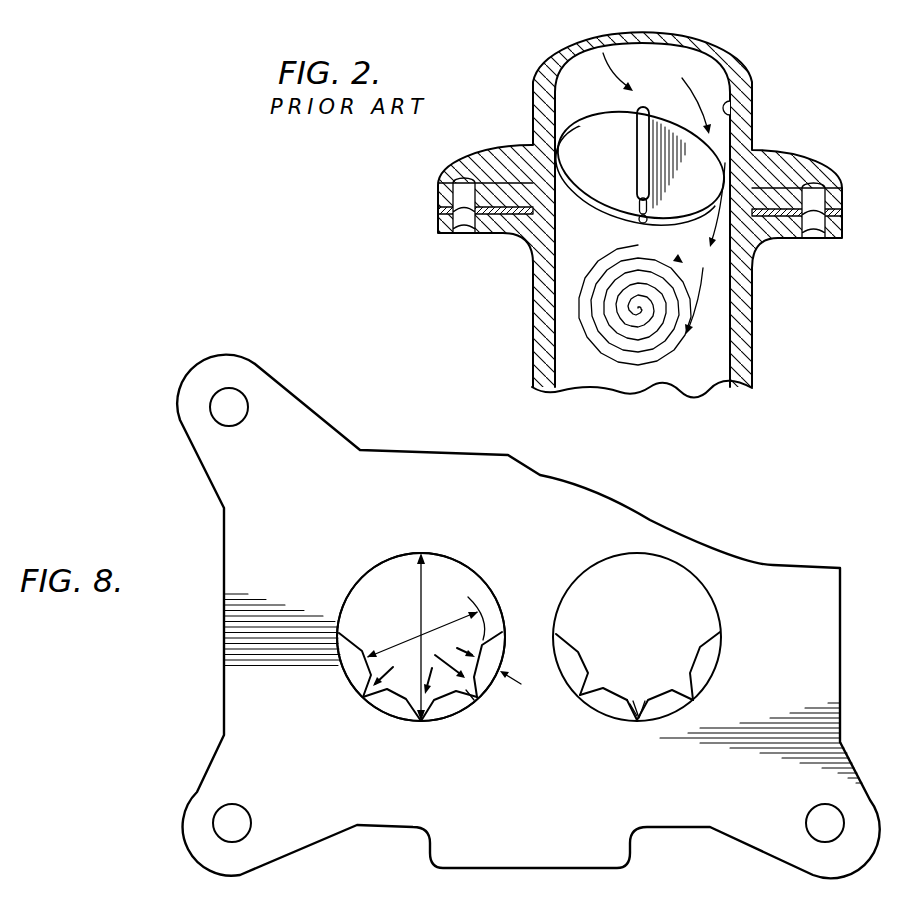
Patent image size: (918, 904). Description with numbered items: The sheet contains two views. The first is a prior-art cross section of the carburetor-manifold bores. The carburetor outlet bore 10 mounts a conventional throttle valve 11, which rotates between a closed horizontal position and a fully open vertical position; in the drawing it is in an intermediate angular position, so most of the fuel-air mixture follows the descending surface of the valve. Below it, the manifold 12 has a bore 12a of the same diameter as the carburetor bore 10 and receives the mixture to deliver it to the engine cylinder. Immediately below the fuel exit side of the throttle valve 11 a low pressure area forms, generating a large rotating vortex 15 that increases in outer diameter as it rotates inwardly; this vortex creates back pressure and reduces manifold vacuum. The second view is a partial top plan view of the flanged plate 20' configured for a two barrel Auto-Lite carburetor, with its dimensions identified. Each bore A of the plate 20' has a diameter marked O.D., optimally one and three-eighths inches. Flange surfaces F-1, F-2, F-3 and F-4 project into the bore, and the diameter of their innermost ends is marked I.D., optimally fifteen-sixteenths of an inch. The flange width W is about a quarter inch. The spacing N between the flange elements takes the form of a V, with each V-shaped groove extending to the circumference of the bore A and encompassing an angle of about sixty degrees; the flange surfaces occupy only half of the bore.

In FIG. 2, the carburetor outlet bore 10 is at (731, 110).
In FIG. 2, the throttle valve 11 is at (590, 127).
In FIG. 2, the manifold 12 is at (742, 325).
In FIG. 2, the manifold bore 12a is at (557, 300).
In FIG. 2, the rotating vortex 15 is at (627, 365).
In FIG. 8, the flanged plate 20' is at (487, 617).
In FIG. 8, the bore A is at (369, 578).
In FIG. 8, the bore diameter dimension O.D. is at (425, 580).
In FIG. 8, the inner diameter dimension I.D. is at (465, 585).
In FIG. 8, the flange surface F-1 is at (494, 641).
In FIG. 8, the flange surface F-2 is at (436, 712).
In FIG. 8, the flange surface F-3 is at (385, 706).
In FIG. 8, the flange surface F-4 is at (352, 672).
In FIG. 8, the flange width dimension W is at (486, 662).
In FIG. 8, the spacing between flange elements N is at (422, 653).